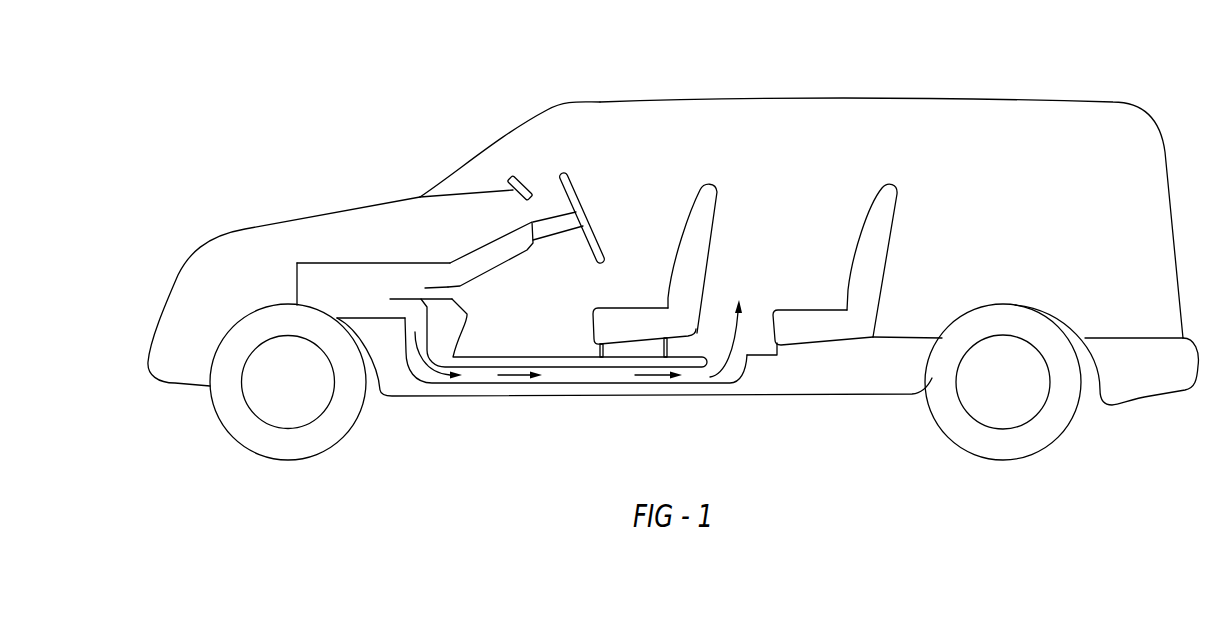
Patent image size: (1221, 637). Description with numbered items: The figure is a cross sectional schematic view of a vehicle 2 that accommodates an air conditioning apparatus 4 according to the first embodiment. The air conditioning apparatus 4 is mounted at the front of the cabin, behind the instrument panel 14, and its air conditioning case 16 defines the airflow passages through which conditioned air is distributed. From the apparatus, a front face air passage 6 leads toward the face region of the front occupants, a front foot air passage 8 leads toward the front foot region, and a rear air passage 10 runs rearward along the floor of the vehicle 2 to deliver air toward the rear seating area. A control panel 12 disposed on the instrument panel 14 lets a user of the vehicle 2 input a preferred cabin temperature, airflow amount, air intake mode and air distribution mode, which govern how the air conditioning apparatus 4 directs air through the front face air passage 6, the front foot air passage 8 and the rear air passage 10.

The vehicle 2 is at (827, 97).
The air conditioning apparatus 4 is at (360, 246).
The front face air passage 6 is at (495, 240).
The front foot air passage 8 is at (445, 293).
The rear air passage 10 is at (397, 310).
The control panel 12 is at (520, 178).
The instrument panel 14 is at (507, 190).
The air conditioning case 16 is at (417, 262).